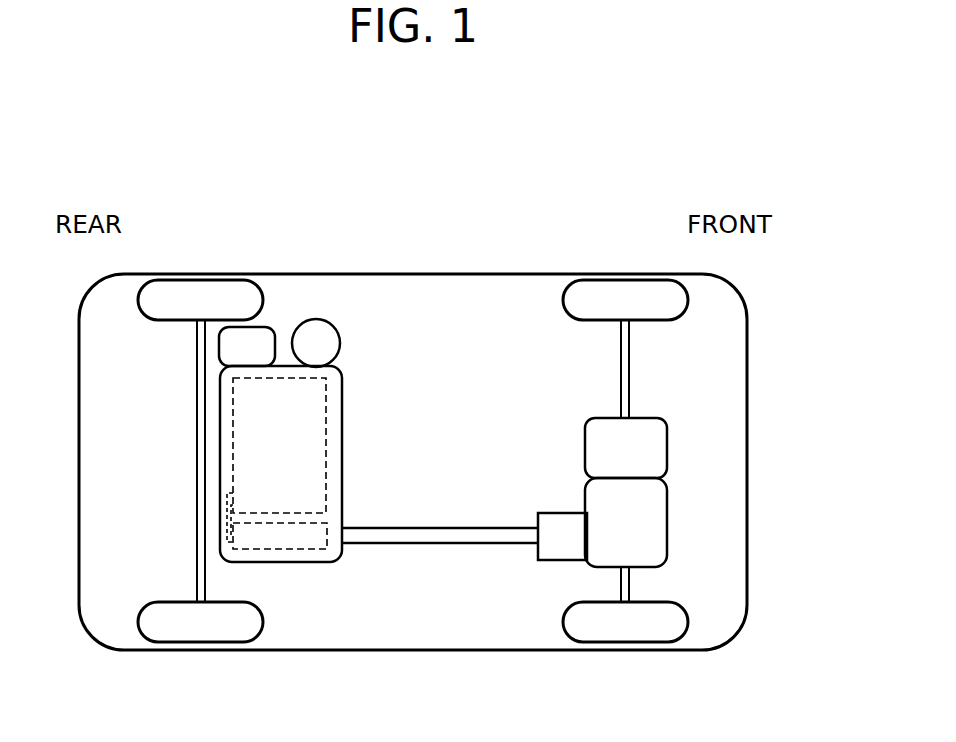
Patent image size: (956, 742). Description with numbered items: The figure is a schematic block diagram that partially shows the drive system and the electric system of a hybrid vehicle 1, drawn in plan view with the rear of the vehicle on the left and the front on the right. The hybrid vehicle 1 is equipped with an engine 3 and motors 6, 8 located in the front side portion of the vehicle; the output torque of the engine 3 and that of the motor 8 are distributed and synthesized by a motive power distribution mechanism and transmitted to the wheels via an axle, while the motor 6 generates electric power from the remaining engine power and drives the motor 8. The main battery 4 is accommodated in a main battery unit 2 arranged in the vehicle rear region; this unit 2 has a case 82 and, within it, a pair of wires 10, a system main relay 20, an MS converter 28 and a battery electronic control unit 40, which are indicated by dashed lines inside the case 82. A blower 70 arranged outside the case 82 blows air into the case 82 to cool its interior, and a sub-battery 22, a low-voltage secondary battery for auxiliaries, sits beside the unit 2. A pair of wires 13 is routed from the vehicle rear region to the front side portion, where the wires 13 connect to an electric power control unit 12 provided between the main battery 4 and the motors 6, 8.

The hybrid vehicle 1 is at (545, 208).
The main battery unit 2 is at (396, 468).
The engine 3 is at (667, 447).
The main battery 4 is at (326, 458).
The motor 6 is at (698, 522).
The motor 8 is at (667, 530).
The wires 10 is at (218, 527).
The electric power control unit 12 is at (552, 560).
The wires 13 is at (465, 545).
The system main relay 20 is at (297, 621).
The sub-battery 22 is at (265, 335).
The MS converter 28 is at (297, 621).
The battery electronic control unit 40 is at (290, 550).
The blower 70 is at (322, 332).
The case 82 is at (326, 468).